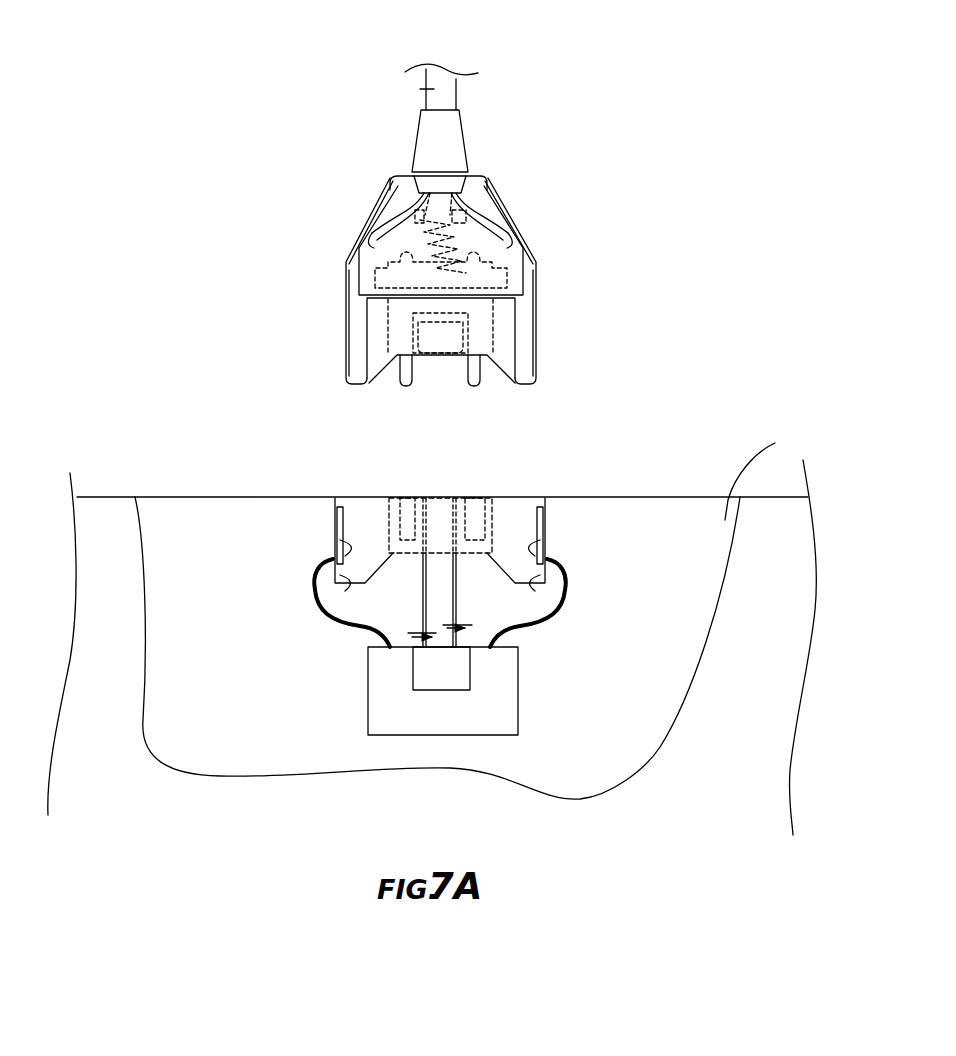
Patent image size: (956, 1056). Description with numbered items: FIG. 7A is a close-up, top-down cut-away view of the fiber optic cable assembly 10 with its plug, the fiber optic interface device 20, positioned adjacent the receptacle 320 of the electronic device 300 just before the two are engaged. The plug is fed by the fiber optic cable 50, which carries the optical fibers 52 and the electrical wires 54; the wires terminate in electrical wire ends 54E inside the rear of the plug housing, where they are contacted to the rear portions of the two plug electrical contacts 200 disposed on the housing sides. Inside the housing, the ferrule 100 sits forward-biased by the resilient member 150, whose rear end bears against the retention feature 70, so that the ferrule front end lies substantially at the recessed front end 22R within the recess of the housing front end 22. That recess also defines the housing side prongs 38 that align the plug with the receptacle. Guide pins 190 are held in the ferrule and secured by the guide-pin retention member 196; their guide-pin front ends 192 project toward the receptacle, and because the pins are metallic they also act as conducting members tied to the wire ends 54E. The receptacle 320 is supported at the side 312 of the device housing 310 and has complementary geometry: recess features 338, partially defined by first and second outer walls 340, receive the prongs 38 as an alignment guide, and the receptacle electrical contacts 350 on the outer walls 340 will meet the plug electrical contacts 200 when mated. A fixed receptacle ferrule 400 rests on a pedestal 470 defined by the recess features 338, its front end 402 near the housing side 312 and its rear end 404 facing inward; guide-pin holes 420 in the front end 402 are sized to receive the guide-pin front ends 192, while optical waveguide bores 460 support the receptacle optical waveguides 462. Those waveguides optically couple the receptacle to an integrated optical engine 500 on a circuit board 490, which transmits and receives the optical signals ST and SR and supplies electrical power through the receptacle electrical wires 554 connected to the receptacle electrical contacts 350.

The fiber optic cable assembly 10 is at (280, 215).
The fiber optic interface device 20 is at (300, 337).
The front end 22 is at (540, 383).
The recessed front end 22R is at (438, 372).
The prongs 38 is at (499, 350).
The fiber optic cable 50 is at (405, 72).
The optical fiber 52 is at (457, 188).
The electrical wire 54 is at (413, 165).
The electrical wire ends 54E is at (384, 212).
The retention feature 70 is at (396, 192).
The ferrule 100 is at (488, 331).
The resilient member 150 is at (490, 232).
The guide pins 190 is at (400, 372).
The guide-pin front ends 192 is at (406, 388).
The guide-pin retention member 196 is at (387, 277).
The plug electrical contacts 200 is at (345, 320).
The electronic device 300 is at (100, 488).
The housing 310 is at (778, 567).
The side 312 is at (768, 469).
The receptacle 320 is at (318, 535).
The recess features 338 is at (340, 498).
The outer walls 340 is at (336, 581).
The receptacle electrical contacts 350 is at (334, 557).
The receptacle ferrule 400 is at (435, 528).
The front end 402 is at (440, 498).
The rear end 404 is at (452, 627).
The guide-pin holes 420 is at (362, 522).
The optical waveguide bores 460 is at (458, 512).
The receptacle optical waveguides 462 is at (447, 605).
The pedestal 470 is at (500, 545).
The circuit board 490 is at (368, 713).
The integrated optical engine 500 is at (457, 682).
The receptacle electrical wires 554 is at (330, 598).
The receive optical signal SR is at (418, 633).
The transmit optical signal ST is at (462, 555).